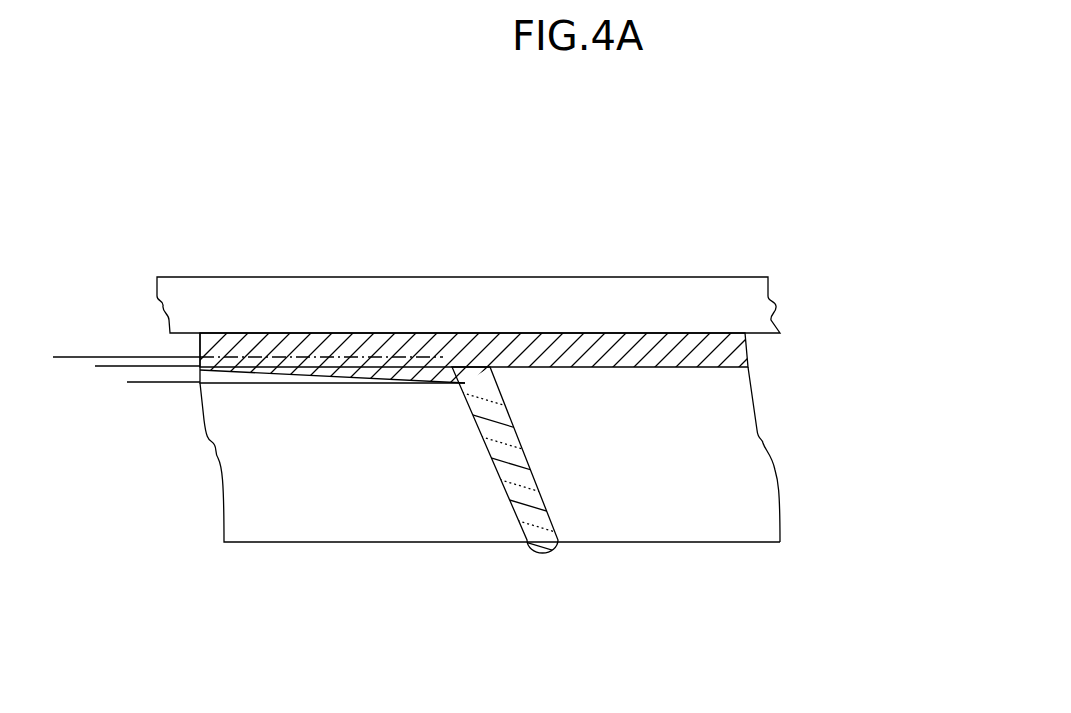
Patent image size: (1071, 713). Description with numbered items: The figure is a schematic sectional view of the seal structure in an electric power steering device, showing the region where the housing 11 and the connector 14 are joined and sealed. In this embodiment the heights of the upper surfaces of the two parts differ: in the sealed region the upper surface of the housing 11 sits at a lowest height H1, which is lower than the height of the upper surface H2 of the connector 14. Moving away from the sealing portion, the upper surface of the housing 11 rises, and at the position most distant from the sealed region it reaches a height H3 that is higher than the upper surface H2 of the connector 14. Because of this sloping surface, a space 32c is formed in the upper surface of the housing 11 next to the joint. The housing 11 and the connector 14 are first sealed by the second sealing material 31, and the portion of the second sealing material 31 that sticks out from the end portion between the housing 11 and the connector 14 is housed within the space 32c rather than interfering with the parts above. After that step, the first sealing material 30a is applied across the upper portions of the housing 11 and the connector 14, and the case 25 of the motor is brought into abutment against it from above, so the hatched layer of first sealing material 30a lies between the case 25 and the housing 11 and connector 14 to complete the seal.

The case 25 is at (298, 272).
The first sealing material 30a is at (658, 335).
The space 32c is at (443, 383).
The second sealing material 31 is at (548, 522).
The housing 11 is at (302, 542).
The connector 14 is at (780, 490).
The lowest height H1 is at (142, 393).
The height of upper surface of connector H2 is at (110, 377).
The height at position most distant from sealed region H3 is at (70, 368).